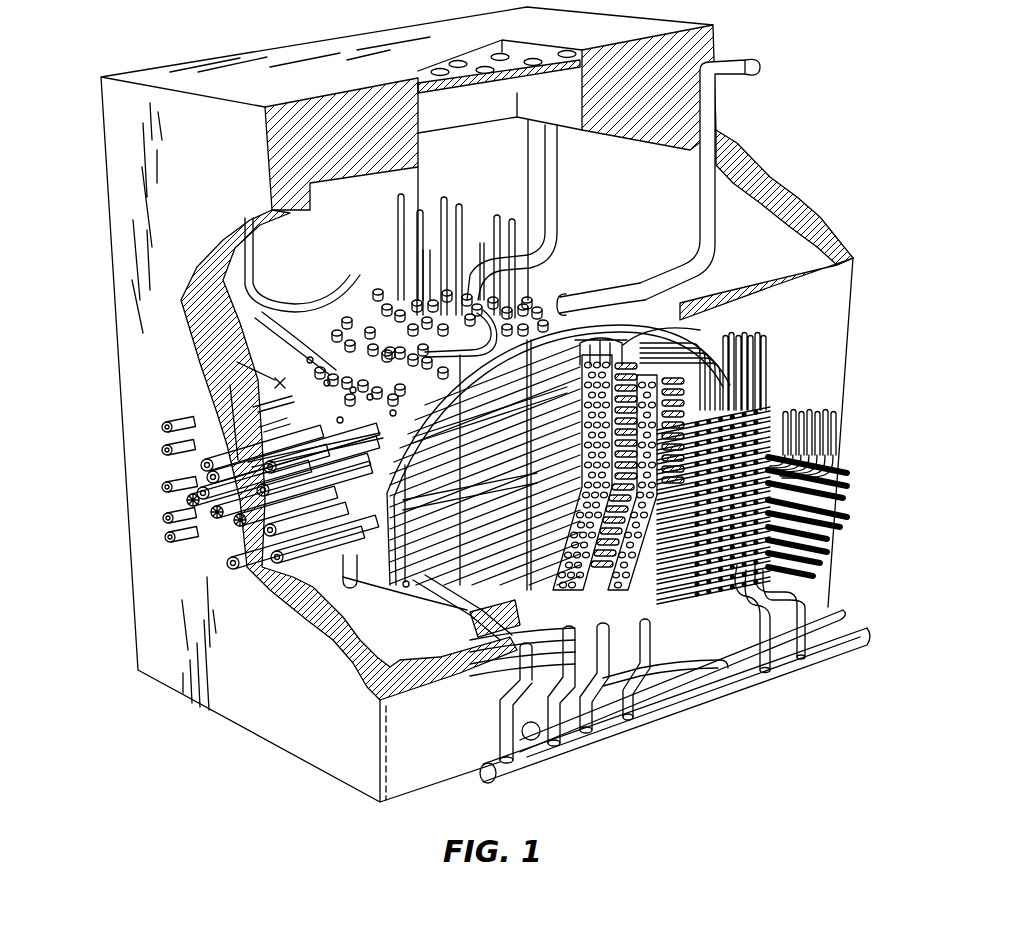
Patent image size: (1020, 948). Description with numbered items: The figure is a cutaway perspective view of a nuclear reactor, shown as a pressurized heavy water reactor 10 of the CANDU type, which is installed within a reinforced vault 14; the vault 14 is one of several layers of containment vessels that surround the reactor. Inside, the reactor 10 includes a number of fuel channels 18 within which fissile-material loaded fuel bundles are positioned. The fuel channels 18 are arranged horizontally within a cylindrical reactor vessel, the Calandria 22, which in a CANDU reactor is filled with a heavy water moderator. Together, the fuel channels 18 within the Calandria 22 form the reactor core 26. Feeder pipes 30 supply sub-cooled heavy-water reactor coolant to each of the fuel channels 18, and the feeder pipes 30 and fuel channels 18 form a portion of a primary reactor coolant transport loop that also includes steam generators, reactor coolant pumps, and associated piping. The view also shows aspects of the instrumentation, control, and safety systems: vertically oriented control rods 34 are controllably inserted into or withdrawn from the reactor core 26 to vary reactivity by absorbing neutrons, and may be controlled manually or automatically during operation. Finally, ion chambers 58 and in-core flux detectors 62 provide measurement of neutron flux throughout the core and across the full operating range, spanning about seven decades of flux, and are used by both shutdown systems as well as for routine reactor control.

The pressurized heavy water reactor 10 is at (563, 260).
The reinforced vault 14 is at (773, 207).
The fuel channels 18 is at (632, 340).
The Calandria 22 is at (357, 428).
The reactor core 26 is at (505, 562).
The feeder pipes 30 is at (733, 330).
The control rods 34 is at (463, 212).
The ion chambers 58 is at (225, 535).
The in-core flux detectors 62 is at (178, 421).